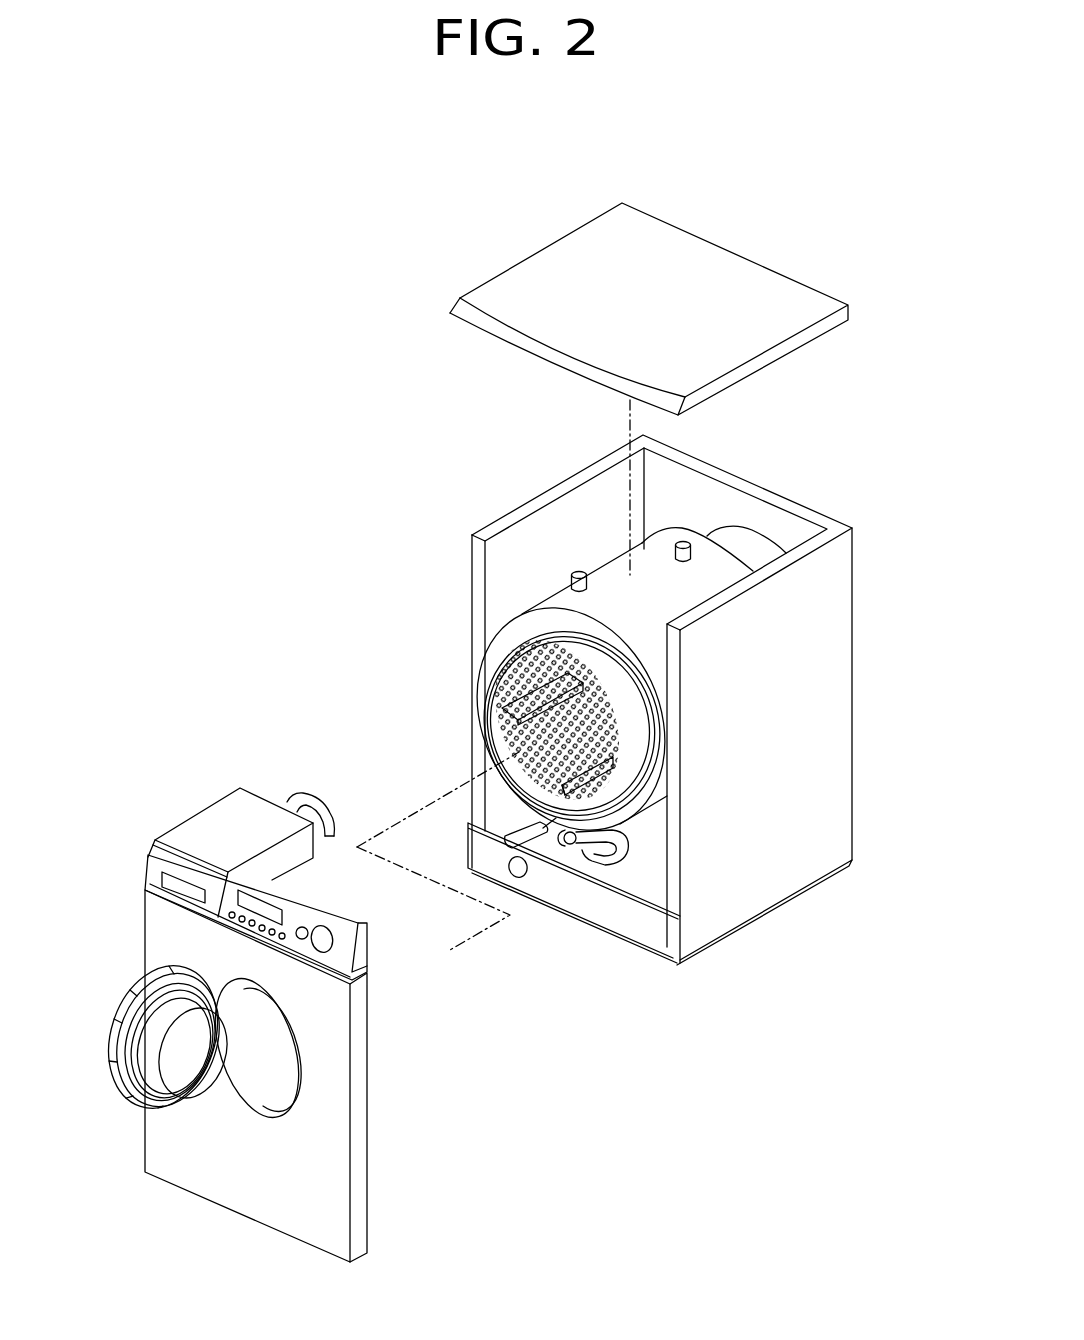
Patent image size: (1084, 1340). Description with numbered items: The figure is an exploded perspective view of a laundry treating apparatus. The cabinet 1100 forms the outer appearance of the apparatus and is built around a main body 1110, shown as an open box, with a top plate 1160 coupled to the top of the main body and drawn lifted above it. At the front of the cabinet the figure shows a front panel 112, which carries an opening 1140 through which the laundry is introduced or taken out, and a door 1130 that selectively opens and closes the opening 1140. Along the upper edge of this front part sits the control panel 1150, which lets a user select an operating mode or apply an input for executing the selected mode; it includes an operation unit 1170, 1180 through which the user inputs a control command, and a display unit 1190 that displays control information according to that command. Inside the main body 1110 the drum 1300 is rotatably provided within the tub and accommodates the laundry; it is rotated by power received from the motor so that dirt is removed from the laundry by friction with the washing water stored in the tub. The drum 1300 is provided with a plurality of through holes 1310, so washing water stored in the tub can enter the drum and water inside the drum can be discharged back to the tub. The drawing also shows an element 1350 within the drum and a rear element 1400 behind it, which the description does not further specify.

The cabinet 1100 is at (783, 917).
The main body 1110 is at (848, 707).
The front panel 112 is at (247, 1203).
The door 1130 is at (177, 1040).
The opening 1140 is at (287, 1053).
The control panel 1150 is at (362, 953).
The top plate 1160 is at (738, 262).
The operation unit 1170 is at (303, 940).
The operation unit 1180 is at (232, 918).
The display unit 1190 is at (222, 873).
The drum 1300 is at (496, 686).
The through holes 1310 is at (518, 660).
The lifter 1350 is at (517, 713).
The rear drum dome / driving unit 1400 is at (747, 537).